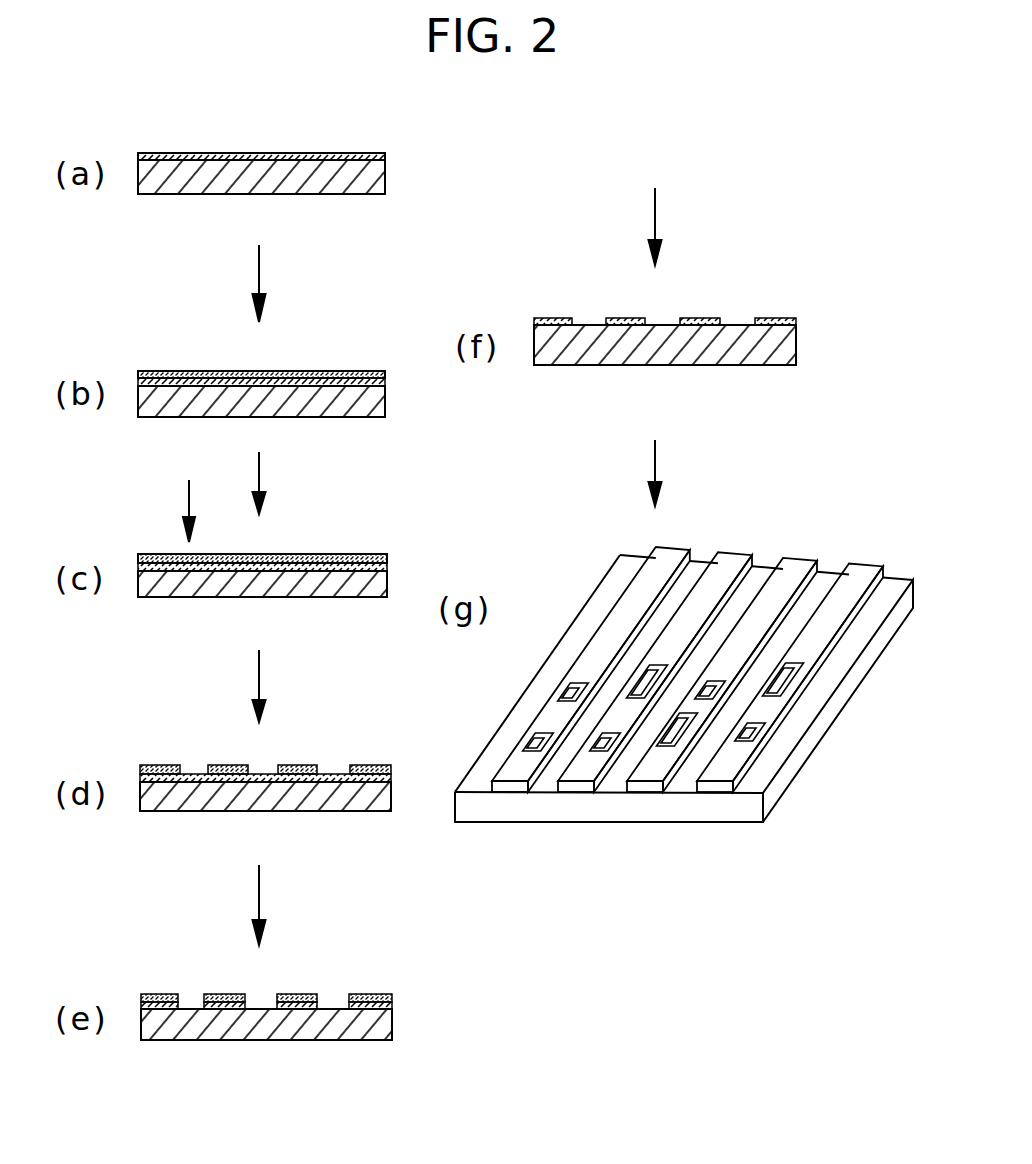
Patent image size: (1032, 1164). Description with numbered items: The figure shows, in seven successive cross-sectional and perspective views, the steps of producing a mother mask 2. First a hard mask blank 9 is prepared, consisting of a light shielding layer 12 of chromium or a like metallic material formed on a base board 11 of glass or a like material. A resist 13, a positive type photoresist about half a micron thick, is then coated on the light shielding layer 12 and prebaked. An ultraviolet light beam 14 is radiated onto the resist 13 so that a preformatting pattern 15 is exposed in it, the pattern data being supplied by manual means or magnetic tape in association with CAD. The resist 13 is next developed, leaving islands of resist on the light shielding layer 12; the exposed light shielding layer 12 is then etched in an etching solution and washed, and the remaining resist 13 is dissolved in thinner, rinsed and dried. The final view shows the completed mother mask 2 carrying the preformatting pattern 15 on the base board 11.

The mother mask 2 is at (588, 585).
The hard mask blank 9 is at (315, 152).
The base board 11 is at (184, 180).
The light shielding layer 12 is at (256, 152).
The resist 13 is at (348, 371).
The light beam 14 is at (190, 504).
The preformatting pattern 15 is at (566, 690).